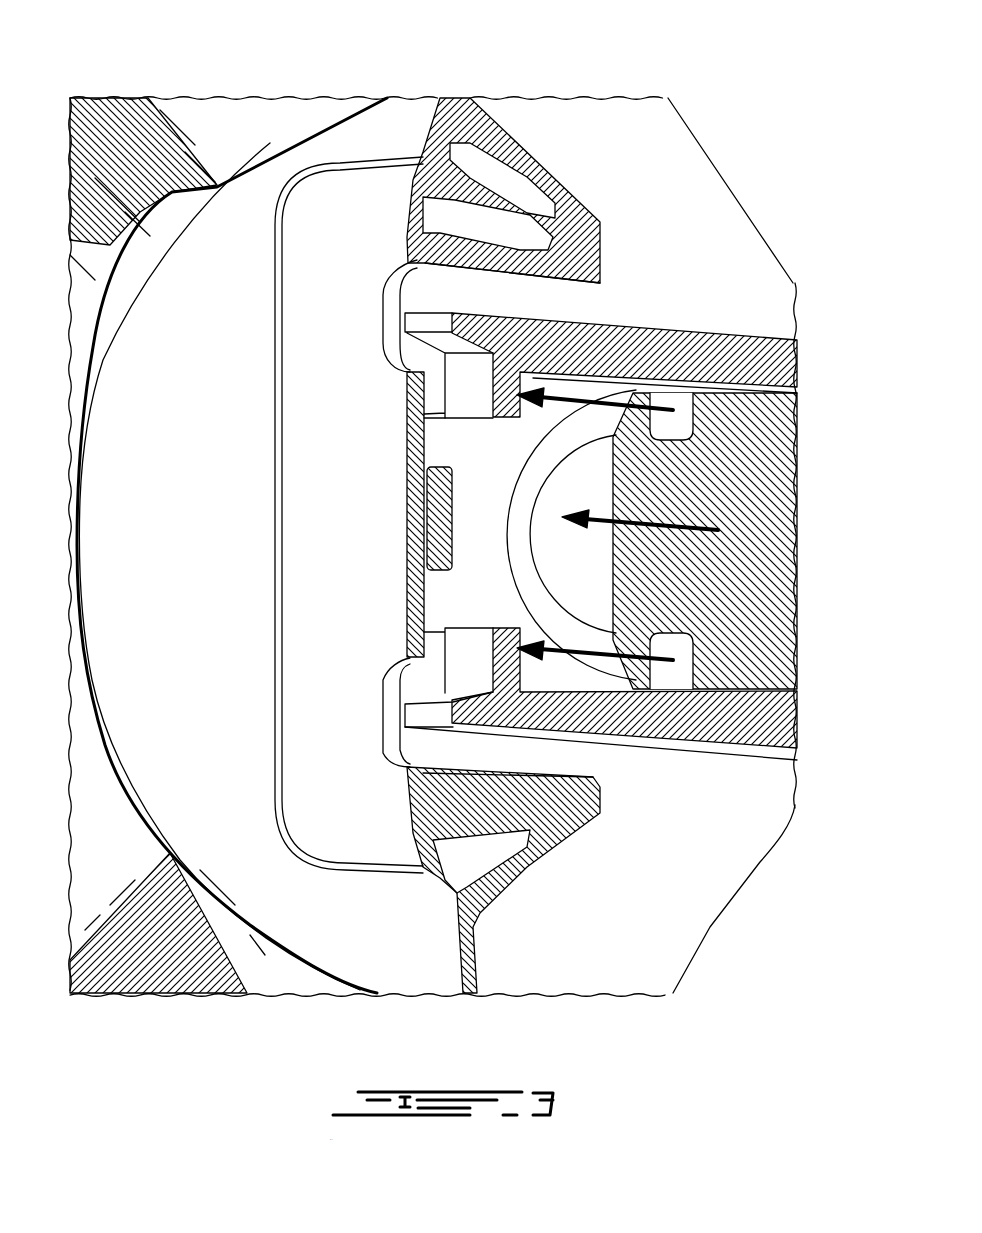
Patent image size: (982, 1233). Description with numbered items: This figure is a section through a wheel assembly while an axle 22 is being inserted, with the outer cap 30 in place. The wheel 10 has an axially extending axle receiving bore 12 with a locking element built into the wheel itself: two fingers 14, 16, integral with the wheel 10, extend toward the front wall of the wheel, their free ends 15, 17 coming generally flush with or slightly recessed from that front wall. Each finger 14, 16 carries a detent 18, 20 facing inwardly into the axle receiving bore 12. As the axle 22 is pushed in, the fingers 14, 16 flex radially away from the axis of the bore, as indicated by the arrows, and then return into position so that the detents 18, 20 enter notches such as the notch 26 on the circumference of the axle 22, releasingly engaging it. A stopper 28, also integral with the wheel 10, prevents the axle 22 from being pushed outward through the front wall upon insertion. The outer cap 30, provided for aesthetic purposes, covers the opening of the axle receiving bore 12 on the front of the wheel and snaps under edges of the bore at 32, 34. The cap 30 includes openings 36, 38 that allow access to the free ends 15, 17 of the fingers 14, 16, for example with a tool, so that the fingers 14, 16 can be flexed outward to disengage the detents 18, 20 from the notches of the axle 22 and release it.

The wheel 10 is at (655, 180).
The axle receiving bore 12 is at (498, 462).
The finger 14 is at (710, 730).
The free end 15 is at (417, 717).
The finger 16 is at (723, 357).
The free end 17 is at (417, 323).
The detent 18 is at (525, 366).
The detent 20 is at (508, 675).
The axle 22 is at (738, 583).
The notch 26 is at (683, 412).
The stopper 28 is at (468, 516).
The outer cap 30 is at (356, 537).
The edge of the axle receiving bore 32 is at (497, 930).
The edge of the axle receiving bore 34 is at (496, 110).
The opening 36 is at (395, 717).
The opening 38 is at (393, 313).